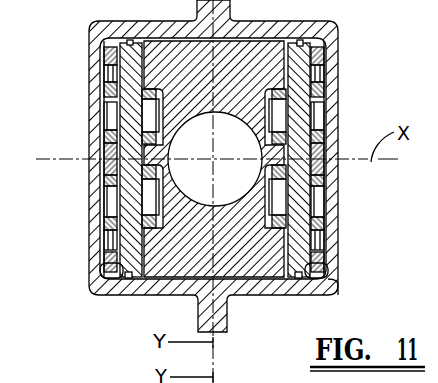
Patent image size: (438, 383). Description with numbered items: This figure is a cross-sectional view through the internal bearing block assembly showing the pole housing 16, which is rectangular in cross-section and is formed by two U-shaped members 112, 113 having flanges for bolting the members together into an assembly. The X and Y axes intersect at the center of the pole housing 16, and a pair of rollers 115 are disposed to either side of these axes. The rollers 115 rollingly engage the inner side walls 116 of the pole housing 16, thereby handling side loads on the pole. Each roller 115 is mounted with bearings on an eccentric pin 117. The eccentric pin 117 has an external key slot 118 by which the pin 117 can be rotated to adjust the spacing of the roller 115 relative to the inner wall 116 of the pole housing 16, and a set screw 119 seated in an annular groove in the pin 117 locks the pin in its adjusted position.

The pole housing 16 is at (347, 64).
The U-shaped member 112 is at (340, 230).
The U-shaped member 113 is at (88, 237).
The roller 115 is at (315, 203).
The inner side wall 116 is at (334, 292).
The eccentric pin 117 is at (322, 244).
The external key slot 118 is at (297, 284).
The set screw 119 is at (322, 241).